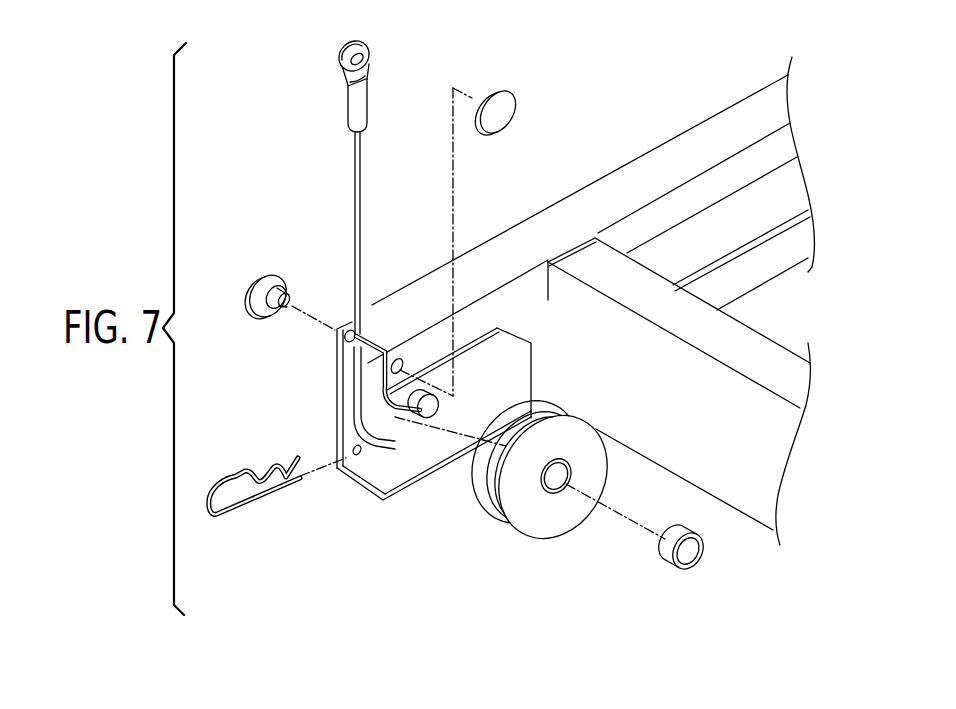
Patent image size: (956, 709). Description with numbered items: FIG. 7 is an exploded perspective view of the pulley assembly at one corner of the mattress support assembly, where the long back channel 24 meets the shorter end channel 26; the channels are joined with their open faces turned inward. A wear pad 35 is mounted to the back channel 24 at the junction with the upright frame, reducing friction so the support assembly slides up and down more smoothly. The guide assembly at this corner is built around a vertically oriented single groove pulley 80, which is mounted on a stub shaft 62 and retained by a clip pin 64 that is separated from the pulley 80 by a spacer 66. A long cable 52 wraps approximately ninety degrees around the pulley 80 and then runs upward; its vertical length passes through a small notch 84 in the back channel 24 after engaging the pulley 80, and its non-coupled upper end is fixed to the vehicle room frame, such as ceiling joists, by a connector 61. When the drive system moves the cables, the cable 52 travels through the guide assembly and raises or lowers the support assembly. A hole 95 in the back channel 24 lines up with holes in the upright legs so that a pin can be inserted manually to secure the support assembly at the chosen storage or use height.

The back channel 24 is at (668, 148).
The end channel 26 is at (745, 503).
The wear pad 35 is at (510, 125).
The long cable 52 is at (351, 245).
The connector 61 is at (349, 104).
The stub shaft 62 is at (410, 412).
The clip pin 64 is at (213, 518).
The spacer 66 is at (697, 570).
The vertically oriented single groove pulley 80 is at (543, 527).
The notch 84 is at (364, 327).
The hole 95 is at (337, 470).